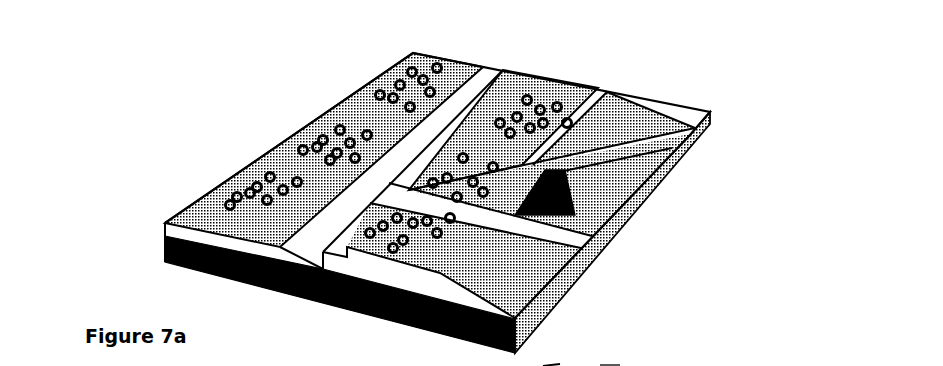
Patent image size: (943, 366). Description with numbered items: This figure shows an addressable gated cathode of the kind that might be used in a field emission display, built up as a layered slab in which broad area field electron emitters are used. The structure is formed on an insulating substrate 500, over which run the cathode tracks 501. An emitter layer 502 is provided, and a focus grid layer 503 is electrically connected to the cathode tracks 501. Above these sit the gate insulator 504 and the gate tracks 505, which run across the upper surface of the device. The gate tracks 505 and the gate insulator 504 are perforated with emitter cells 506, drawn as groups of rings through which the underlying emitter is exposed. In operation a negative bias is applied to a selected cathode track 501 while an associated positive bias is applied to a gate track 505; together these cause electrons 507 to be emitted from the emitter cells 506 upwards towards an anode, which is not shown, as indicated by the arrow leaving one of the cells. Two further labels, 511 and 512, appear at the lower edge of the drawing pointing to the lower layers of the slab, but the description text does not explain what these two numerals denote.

The insulating substrate 500 is at (498, 196).
The cathode tracks 501 is at (605, 205).
The emitter layer 502 is at (612, 158).
The focus grid layer 503 is at (590, 256).
The gate insulator 504 is at (620, 100).
The gate tracks 505 is at (254, 158).
The emitter cells 506 is at (460, 153).
The electrons 507 is at (303, 150).
The lower layer 511 is at (543, 365).
The lower layer 512 is at (716, 360).